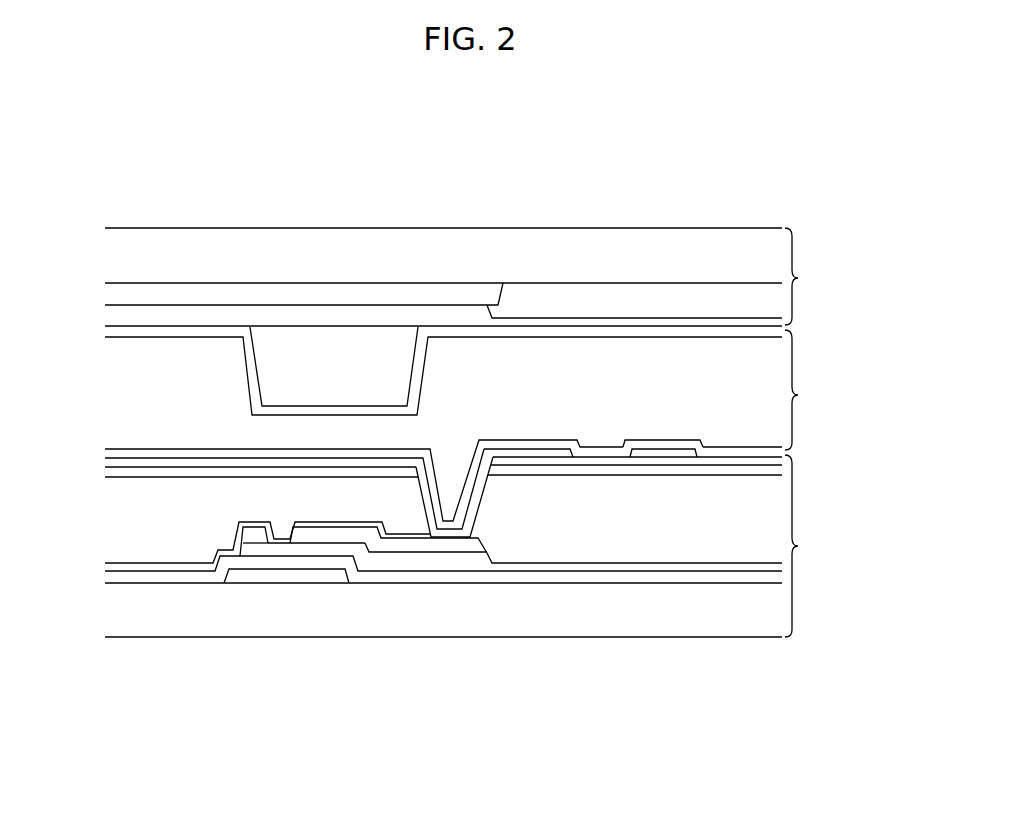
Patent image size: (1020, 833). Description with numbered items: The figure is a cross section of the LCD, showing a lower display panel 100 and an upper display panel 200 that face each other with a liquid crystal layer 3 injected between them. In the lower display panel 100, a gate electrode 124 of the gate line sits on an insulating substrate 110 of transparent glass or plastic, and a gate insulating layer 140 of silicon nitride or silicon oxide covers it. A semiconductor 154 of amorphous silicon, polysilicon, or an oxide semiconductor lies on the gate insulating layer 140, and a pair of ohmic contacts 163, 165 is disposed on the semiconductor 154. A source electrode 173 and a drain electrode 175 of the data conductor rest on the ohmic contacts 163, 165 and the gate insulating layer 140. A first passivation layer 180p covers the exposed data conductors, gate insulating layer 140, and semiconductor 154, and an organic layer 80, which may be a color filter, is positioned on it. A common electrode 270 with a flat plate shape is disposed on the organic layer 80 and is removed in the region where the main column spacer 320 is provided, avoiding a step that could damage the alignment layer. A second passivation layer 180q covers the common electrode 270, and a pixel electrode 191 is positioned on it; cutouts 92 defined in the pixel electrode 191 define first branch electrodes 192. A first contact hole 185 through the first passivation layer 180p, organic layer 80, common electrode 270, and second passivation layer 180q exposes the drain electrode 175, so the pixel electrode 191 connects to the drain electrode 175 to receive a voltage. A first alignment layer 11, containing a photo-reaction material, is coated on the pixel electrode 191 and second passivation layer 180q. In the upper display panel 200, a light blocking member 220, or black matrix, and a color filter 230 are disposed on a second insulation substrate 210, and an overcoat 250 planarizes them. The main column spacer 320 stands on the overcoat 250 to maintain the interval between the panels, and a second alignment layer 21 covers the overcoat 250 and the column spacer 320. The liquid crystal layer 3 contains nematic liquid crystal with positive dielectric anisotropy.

The second insulation substrate 210 is at (678, 250).
The light blocking member 220 is at (201, 293).
The color filter 230 is at (547, 298).
The overcoat 250 is at (432, 317).
The second alignment layer 21 is at (193, 330).
The main column spacer 320 is at (337, 353).
The upper display panel 200 is at (813, 276).
The liquid crystal layer 3 is at (800, 390).
The lower display panel 100 is at (813, 546).
The first alignment layer 11 is at (145, 452).
The cutout 92 is at (622, 447).
The second passivation layer 180q is at (747, 463).
The pixel electrode 191 is at (527, 454).
The first branch electrode 192 is at (666, 453).
The first contact hole 185 is at (481, 500).
The common electrode 270 is at (693, 470).
The organic layer 80 is at (632, 533).
The first passivation layer 180p is at (567, 568).
The gate insulating layer 140 is at (158, 575).
The source electrode 173 is at (259, 533).
The ohmic contact 163 is at (247, 542).
The semiconductor 154 is at (392, 565).
The ohmic contact 165 is at (425, 557).
The drain electrode 175 is at (468, 547).
The gate electrode 124 is at (310, 575).
The insulating substrate 110 is at (745, 616).